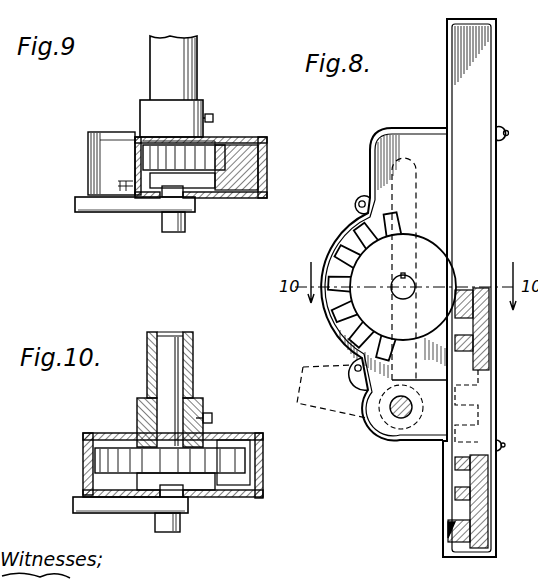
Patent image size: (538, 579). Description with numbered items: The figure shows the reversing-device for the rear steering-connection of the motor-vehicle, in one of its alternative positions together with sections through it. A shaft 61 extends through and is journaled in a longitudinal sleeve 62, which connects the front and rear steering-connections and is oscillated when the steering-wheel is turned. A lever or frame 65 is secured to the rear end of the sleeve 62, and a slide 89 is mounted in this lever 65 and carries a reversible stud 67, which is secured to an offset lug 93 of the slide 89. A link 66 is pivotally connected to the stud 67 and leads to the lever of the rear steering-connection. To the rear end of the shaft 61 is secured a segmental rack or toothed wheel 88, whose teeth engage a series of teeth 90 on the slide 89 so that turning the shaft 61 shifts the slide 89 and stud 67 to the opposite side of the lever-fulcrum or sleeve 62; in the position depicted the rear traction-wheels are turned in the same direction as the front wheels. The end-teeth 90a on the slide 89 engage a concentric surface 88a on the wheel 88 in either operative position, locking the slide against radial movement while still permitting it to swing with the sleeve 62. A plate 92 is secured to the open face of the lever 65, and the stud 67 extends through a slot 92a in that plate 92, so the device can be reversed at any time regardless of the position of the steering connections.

In FIG. 10, the shaft 61 is at (177, 370).
In FIG. 8, the shaft 61 is at (416, 292).
In FIG. 9, the longitudinal sleeve 62 is at (197, 63).
In FIG. 10, the longitudinal sleeve 62 is at (193, 342).
In FIG. 9, the lever or frame 65 is at (219, 137).
In FIG. 10, the lever or frame 65 is at (263, 443).
In FIG. 8, the lever or frame 65 is at (370, 160).
In FIG. 9, the link 66 is at (107, 208).
In FIG. 10, the link 66 is at (125, 508).
In FIG. 9, the stud 67 is at (177, 232).
In FIG. 10, the stud 67 is at (180, 522).
In FIG. 8, the stud 67 is at (393, 420).
In FIG. 9, the segmental rack or toothed wheel 88 is at (143, 156).
In FIG. 10, the segmental rack or toothed wheel 88 is at (95, 456).
In FIG. 8, the segmental rack or toothed wheel 88 is at (364, 286).
In FIG. 8, the concentric surface 88a is at (426, 298).
In FIG. 9, the slide 89 is at (267, 152).
In FIG. 10, the slide 89 is at (255, 481).
In FIG. 8, the slide 89 is at (481, 393).
In FIG. 8, the teeth 90 is at (456, 490).
In FIG. 8, the end-teeth 90a is at (471, 294).
In FIG. 9, the plate 92 is at (245, 200).
In FIG. 10, the plate 92 is at (247, 498).
In FIG. 8, the slot 92a is at (410, 128).
In FIG. 9, the offset lug 93 is at (210, 183).
In FIG. 10, the offset lug 93 is at (215, 490).
In FIG. 8, the offset lug 93 is at (425, 433).